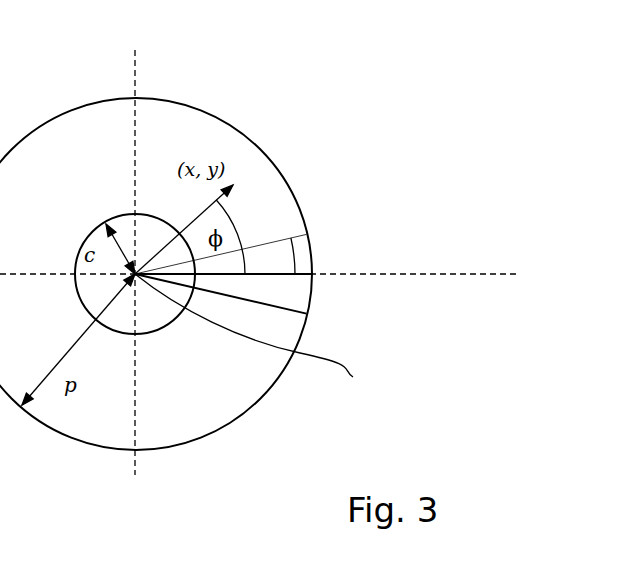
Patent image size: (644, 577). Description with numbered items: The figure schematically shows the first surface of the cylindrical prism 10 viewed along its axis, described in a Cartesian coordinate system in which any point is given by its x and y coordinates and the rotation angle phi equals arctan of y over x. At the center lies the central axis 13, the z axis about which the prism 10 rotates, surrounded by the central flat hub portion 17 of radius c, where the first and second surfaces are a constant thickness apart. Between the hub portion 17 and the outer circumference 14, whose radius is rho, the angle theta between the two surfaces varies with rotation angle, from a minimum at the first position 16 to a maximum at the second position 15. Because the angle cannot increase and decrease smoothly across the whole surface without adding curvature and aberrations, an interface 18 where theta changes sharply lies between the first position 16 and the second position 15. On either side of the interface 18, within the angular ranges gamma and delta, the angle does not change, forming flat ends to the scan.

The prism 10 is at (303, 152).
The central axis 13 is at (261, 334).
The circumference 14 is at (230, 123).
The second position 15 is at (310, 283).
The first position 16 is at (297, 245).
The central flat hub portion 17 is at (165, 328).
The interface 18 is at (313, 273).